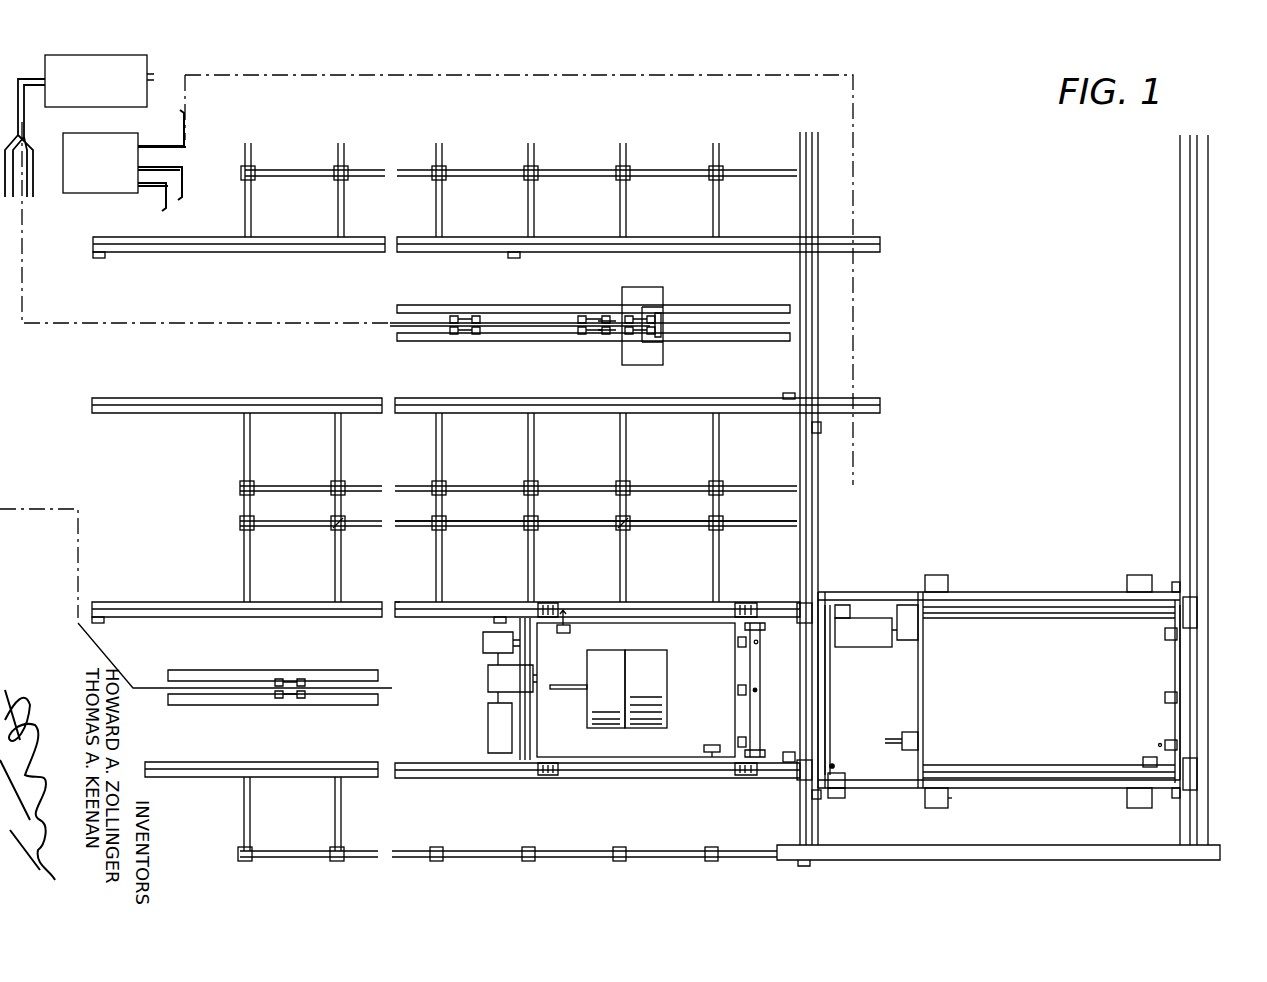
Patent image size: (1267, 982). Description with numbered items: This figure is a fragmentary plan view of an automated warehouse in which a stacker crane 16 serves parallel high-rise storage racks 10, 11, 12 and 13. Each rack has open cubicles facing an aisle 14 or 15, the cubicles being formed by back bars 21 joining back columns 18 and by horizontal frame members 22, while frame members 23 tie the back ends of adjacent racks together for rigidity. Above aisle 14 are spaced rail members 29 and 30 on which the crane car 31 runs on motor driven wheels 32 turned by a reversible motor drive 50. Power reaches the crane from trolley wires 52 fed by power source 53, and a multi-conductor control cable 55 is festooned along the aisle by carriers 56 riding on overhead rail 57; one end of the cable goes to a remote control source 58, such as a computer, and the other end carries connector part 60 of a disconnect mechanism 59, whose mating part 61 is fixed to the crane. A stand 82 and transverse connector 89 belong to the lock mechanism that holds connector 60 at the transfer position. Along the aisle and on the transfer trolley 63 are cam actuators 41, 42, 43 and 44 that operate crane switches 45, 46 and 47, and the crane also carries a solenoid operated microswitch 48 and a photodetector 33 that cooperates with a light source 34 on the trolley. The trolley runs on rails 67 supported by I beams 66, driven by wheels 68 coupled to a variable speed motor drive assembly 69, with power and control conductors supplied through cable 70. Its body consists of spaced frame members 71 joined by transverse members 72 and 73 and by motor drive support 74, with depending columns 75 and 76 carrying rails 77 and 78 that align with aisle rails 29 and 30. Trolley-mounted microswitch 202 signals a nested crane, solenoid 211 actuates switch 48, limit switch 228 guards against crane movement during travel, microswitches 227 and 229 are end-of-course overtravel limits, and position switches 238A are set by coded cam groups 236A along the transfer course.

The high-rise storage rack 10 is at (443, 578).
The high-rise storage rack 11 is at (637, 500).
The high-rise storage rack 12 is at (638, 197).
The high-rise storage rack 13 is at (507, 819).
The aisle 14 is at (237, 532).
The aisle 15 is at (313, 222).
The stacker crane 16 is at (729, 690).
The vertical column 18 is at (254, 530).
The back bar 21 is at (362, 523).
The horizontal frame member 22 is at (632, 528).
The frame member 23 is at (255, 506).
The rail member 29 is at (293, 253).
The rail member 30 is at (210, 398).
The car 31 is at (655, 757).
The motor driven wheel 32 is at (554, 775).
The photodetector 33 is at (746, 740).
The light source 34 is at (905, 745).
The cam actuator 41 is at (108, 258).
The cam actuator 42 is at (795, 395).
The cam actuator 43 is at (1150, 757).
The cam actuator 44 is at (1165, 635).
The switch 45 is at (563, 633).
The switch 46 is at (715, 745).
The switch 47 is at (746, 647).
The solenoid operated microswitch 48 is at (746, 688).
The reversible motor drive 50 is at (490, 720).
The trolley wires 52 is at (186, 196).
The power source 53 is at (100, 163).
The multi-conductor control cable 55 is at (29, 173).
The carrier 56 is at (456, 334).
The rail 57 is at (462, 305).
The control source 58 is at (99, 81).
The disconnect mechanism 59 is at (642, 636).
The connector part 60 is at (660, 287).
The connector part 61 is at (646, 689).
The transfer trolley 63 is at (1010, 572).
The I beam 66 is at (818, 365).
The rail 67 is at (808, 340).
The wheel 68 is at (812, 610).
The variable speed motor drive assembly 69 is at (876, 626).
The cable 70 is at (258, 80).
The frame member 71 is at (1073, 592).
The transverse member 72 is at (828, 735).
The transverse member 73 is at (1175, 685).
The motor drive support 74 is at (923, 715).
The depending column 75 is at (1120, 800).
The depending column 76 is at (940, 575).
The rail 77 is at (1060, 765).
The rail 78 is at (1055, 618).
The stand 82 is at (662, 340).
The transverse connector 89 is at (612, 341).
The microswitch 202 is at (1177, 744).
The solenoid 211 is at (1165, 698).
The microswitch 227 is at (1178, 582).
The limit switch 228 is at (840, 773).
The microswitch 229 is at (1176, 798).
The cam group 236A is at (822, 428).
The position microswitches 238A is at (845, 792).